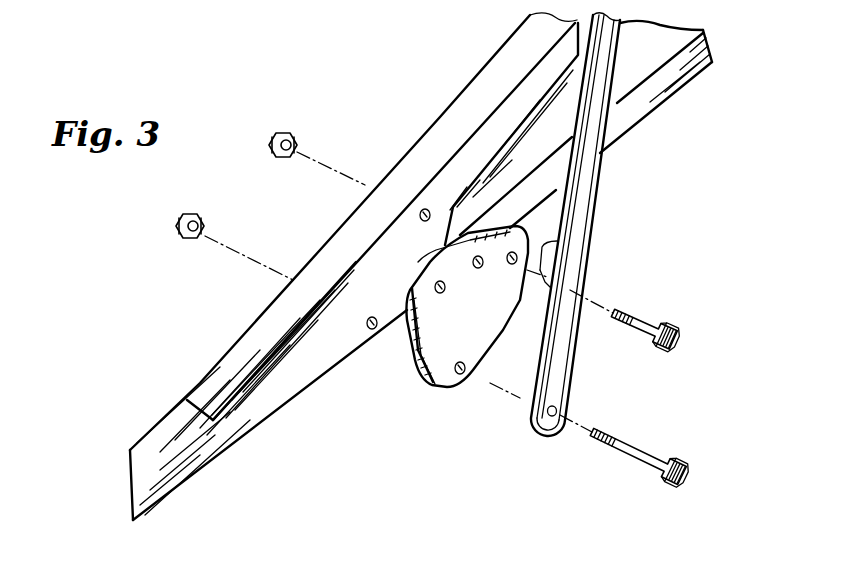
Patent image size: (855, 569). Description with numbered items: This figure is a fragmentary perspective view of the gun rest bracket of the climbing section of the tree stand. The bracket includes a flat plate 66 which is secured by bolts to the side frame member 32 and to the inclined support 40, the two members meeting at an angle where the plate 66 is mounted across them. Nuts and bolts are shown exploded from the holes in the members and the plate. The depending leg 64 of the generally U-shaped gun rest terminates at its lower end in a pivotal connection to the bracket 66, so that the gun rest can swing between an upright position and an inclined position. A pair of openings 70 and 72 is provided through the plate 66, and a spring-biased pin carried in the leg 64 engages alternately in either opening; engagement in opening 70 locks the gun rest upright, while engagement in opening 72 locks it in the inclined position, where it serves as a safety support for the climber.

The side frame member 32 is at (653, 97).
The inclined support member 40 is at (412, 149).
The depending leg 64 is at (557, 241).
The gun rest bracket plate 66 is at (423, 357).
The opening 70 is at (478, 266).
The opening 72 is at (440, 295).